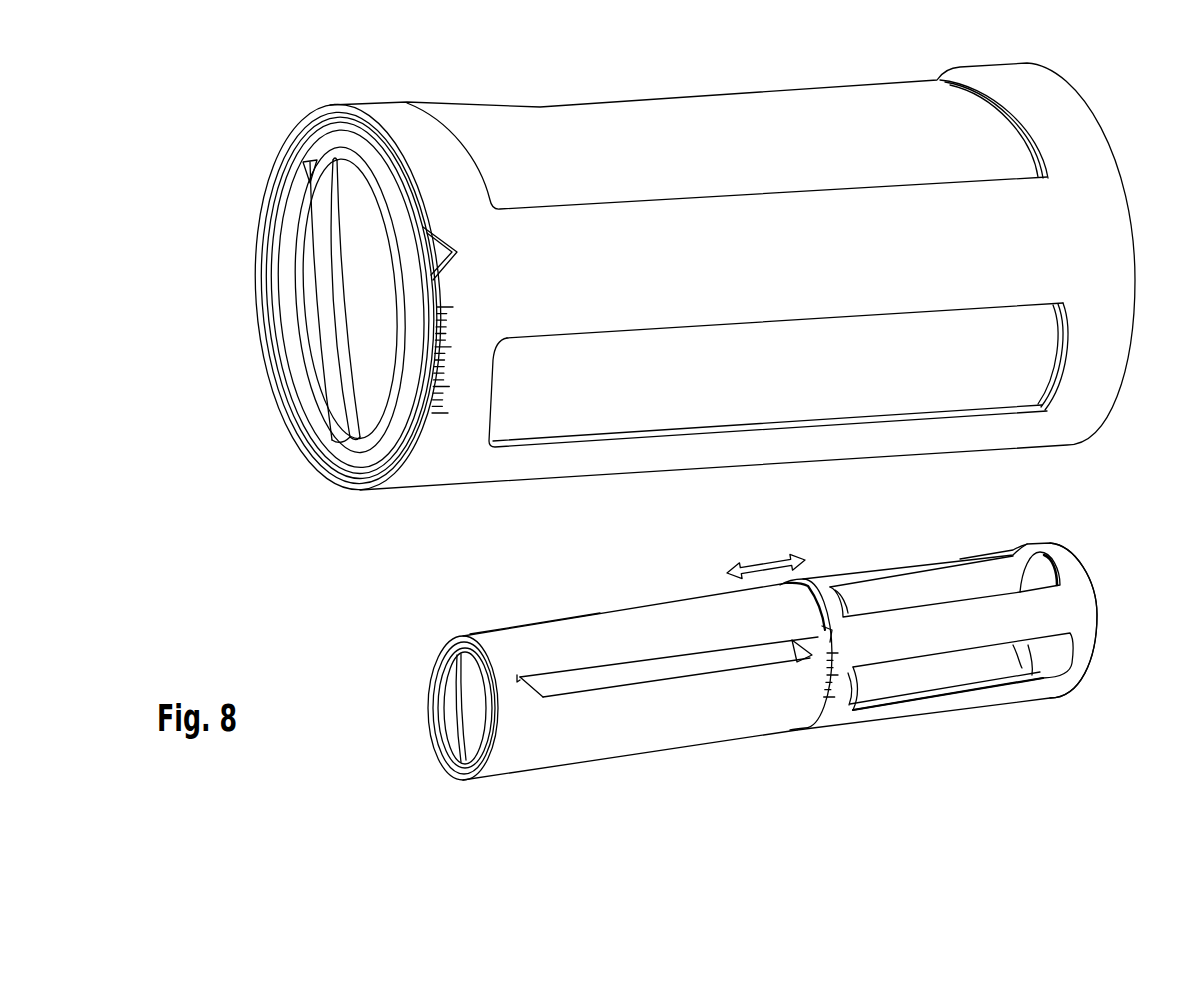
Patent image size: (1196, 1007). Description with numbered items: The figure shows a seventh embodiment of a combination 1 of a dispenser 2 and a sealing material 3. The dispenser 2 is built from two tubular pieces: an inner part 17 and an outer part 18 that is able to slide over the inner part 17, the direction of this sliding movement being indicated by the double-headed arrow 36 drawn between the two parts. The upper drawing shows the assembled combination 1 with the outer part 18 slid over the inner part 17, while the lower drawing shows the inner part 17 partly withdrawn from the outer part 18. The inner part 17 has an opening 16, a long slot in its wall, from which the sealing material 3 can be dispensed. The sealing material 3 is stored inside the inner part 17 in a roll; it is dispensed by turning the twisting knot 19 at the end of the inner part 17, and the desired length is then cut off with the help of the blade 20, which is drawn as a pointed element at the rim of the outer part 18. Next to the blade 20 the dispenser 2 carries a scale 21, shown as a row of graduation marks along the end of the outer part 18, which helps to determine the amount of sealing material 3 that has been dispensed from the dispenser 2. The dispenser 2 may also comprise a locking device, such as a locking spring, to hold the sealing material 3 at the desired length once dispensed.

The combination 1 is at (685, 422).
The dispenser 2 is at (1127, 193).
The sealing material 3 is at (755, 123).
The opening 16 is at (520, 683).
The inner part 17 is at (568, 618).
The outer part 18 is at (1085, 598).
The twisting knot 19 is at (317, 377).
The blade 20 is at (444, 285).
The scale 21 is at (440, 417).
The arrow 36 is at (760, 566).